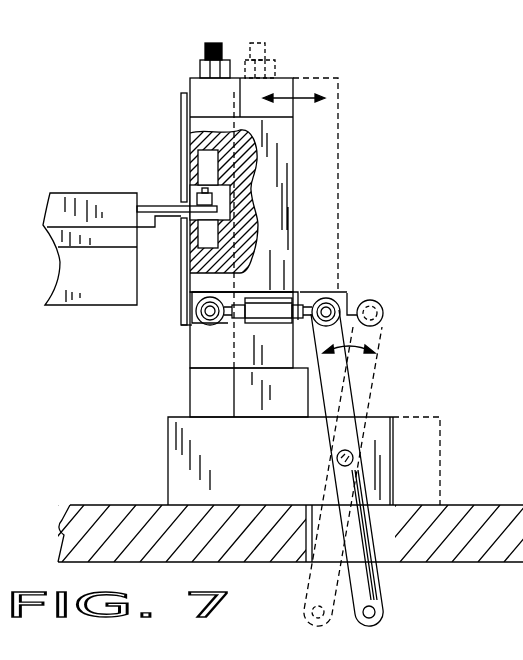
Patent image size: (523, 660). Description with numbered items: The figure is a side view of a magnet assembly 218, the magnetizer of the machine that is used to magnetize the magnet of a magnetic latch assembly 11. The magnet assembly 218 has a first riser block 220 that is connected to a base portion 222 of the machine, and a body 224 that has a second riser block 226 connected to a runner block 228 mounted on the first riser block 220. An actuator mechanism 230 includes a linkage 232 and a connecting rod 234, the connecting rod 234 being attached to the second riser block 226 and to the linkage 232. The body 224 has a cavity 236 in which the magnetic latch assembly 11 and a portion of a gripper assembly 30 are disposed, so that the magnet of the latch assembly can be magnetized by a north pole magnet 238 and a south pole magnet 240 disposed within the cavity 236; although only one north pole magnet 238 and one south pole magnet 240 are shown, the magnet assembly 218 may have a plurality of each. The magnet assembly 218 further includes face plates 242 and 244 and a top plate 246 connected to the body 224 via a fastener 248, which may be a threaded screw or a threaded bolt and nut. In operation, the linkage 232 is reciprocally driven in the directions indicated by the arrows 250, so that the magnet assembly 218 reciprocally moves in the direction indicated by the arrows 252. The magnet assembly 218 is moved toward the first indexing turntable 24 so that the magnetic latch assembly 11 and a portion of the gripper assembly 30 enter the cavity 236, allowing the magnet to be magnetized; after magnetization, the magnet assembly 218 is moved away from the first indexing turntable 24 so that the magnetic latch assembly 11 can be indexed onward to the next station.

The magnetic latch assembly 11 is at (190, 200).
The first indexing turntable 24 is at (67, 202).
The gripper assembly 30 is at (151, 200).
The magnet assembly 218 is at (288, 72).
The first riser block 220 is at (225, 467).
The base portion 222 is at (180, 542).
The body 224 is at (278, 147).
The second riser block 226 is at (207, 344).
The runner block 228 is at (203, 388).
The actuator mechanism 230 is at (380, 405).
The linkage 232 is at (378, 545).
The connecting rod 234 is at (272, 303).
The cavity 236 is at (253, 232).
The north pole magnet 238 is at (191, 178).
The south pole magnet 240 is at (190, 252).
The face plate 242 is at (185, 90).
The face plate 244 is at (186, 312).
The top plate 246 is at (237, 92).
The fastener 248 is at (207, 52).
The arrows 250 is at (375, 343).
The arrows 252 is at (326, 95).